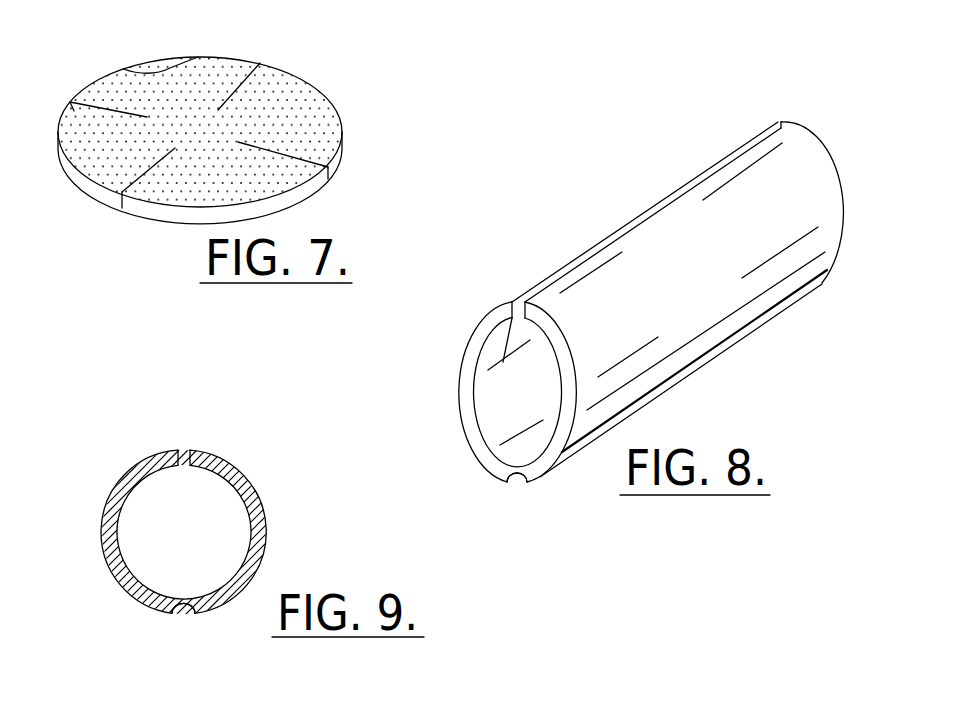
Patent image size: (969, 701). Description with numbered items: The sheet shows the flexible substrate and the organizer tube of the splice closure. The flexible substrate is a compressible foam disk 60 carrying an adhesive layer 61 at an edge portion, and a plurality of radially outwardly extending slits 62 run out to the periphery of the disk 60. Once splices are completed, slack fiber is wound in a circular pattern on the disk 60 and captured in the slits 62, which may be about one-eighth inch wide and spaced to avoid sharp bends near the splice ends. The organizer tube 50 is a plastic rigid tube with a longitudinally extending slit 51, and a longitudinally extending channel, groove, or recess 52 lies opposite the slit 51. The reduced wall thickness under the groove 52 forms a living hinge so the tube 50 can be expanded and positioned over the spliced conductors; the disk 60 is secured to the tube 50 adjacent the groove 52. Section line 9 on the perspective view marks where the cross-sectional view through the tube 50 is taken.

In FIG. 7, the compressible foam disk 60 is at (270, 48).
In FIG. 7, the adhesive layer 61 is at (170, 60).
In FIG. 7, the radially extending slits 62 is at (105, 108).
In FIG. 8, the organizer tube 50 is at (690, 160).
In FIG. 9, the organizer tube 50 is at (262, 465).
In FIG. 8, the longitudinally extending slit 51 is at (522, 344).
In FIG. 9, the longitudinally extending slit 51 is at (204, 442).
In FIG. 8, the longitudinally extending groove 52 is at (535, 494).
In FIG. 9, the longitudinally extending groove 52 is at (202, 626).
In FIG. 8, the section line 9— 9 is at (430, 320).